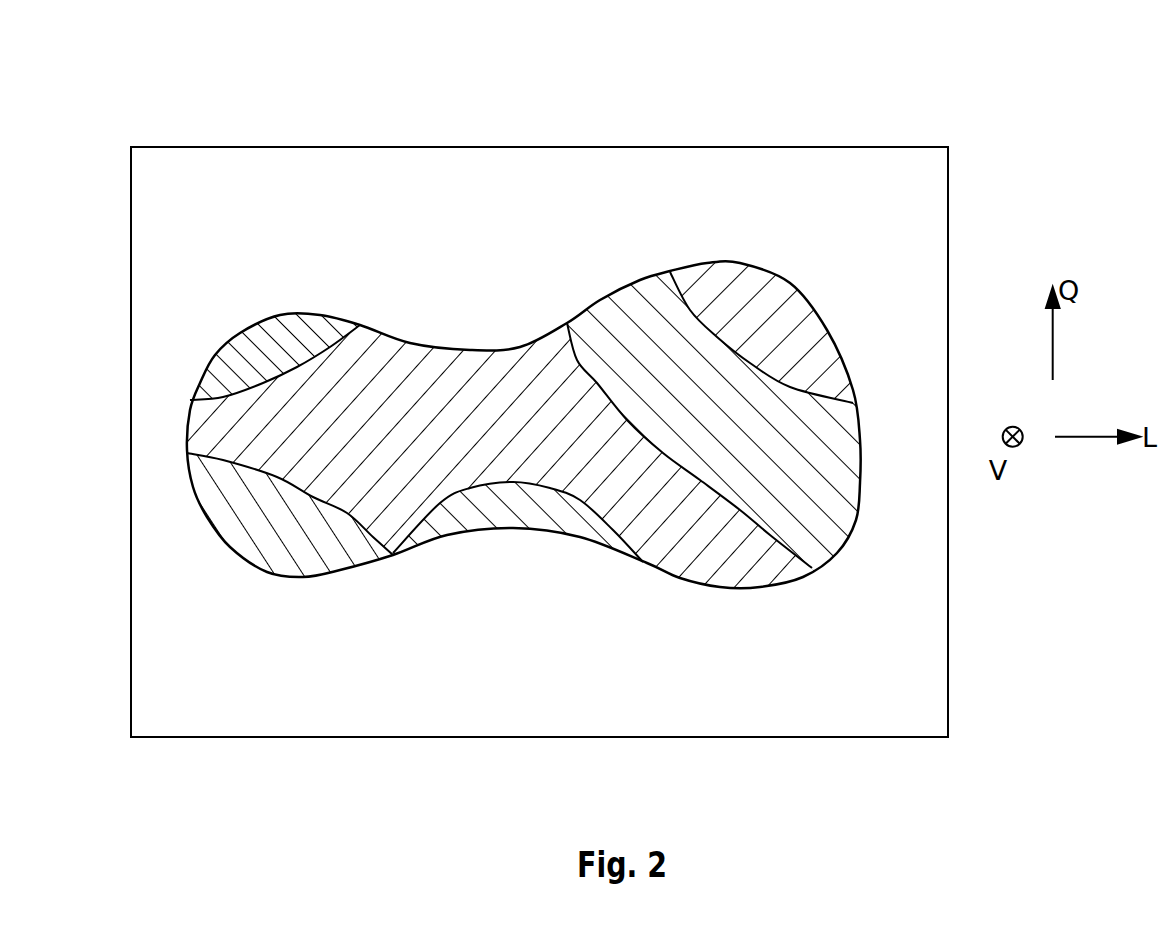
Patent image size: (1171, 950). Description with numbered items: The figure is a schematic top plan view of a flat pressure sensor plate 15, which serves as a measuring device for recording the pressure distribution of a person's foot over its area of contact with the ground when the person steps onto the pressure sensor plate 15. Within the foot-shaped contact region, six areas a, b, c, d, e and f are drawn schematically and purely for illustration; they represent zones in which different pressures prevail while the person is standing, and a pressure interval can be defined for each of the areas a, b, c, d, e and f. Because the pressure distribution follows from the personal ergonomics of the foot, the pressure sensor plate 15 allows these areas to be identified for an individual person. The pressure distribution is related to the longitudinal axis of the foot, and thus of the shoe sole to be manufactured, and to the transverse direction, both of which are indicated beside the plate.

The pressure sensor plate 15 is at (897, 183).
The area a is at (750, 310).
The area b is at (788, 470).
The area c is at (705, 540).
The area d is at (545, 500).
The area e is at (282, 533).
The area f is at (285, 355).